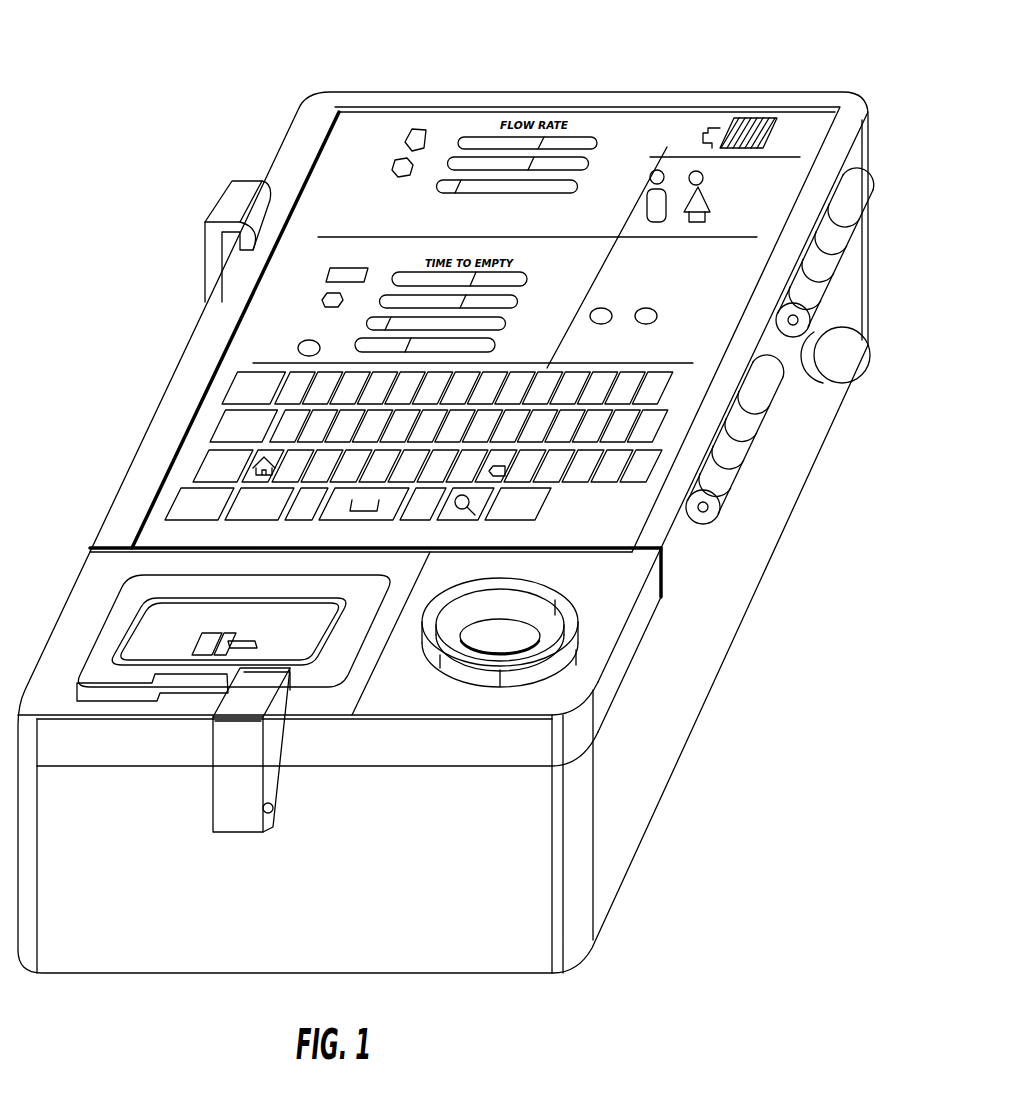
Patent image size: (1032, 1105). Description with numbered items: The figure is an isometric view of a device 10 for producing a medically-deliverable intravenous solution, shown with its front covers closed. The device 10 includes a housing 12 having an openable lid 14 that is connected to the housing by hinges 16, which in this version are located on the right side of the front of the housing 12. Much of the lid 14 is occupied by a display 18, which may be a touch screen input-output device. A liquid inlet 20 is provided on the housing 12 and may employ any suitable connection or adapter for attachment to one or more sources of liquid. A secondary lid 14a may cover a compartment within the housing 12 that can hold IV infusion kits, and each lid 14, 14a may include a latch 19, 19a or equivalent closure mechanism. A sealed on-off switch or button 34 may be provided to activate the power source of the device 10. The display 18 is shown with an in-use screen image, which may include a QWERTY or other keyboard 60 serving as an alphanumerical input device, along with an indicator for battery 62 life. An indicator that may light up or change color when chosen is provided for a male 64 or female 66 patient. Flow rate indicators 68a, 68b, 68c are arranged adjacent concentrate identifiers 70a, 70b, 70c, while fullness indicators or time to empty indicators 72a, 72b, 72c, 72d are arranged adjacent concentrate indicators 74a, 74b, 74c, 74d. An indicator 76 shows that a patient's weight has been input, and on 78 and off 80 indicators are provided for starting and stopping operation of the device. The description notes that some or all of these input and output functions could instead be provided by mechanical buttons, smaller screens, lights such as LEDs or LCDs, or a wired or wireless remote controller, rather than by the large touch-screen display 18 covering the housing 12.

The device 10 is at (178, 133).
The housing 12 is at (643, 837).
The openable lid 14 is at (672, 557).
The secondary lid 14a is at (340, 757).
The hinges 16 is at (826, 275).
The display 18 is at (688, 131).
The latch 19 is at (212, 195).
The latch 19a is at (270, 783).
The liquid inlet 20 is at (573, 602).
The on-off switch or button 34 is at (848, 352).
The keyboard 60 is at (203, 466).
The battery 62 is at (745, 118).
The male patient indicator 64 is at (612, 243).
The female patient indicator 66 is at (702, 197).
The flow rate indicator 68a is at (596, 140).
The flow rate indicator 68b is at (588, 160).
The flow rate indicator 68c is at (548, 193).
The concentrate identifier 70a is at (410, 135).
The concentrate identifier 70b is at (394, 166).
The concentrate identifier 70c is at (382, 188).
The fullness indicator/time to empty indicator 72a is at (527, 280).
The fullness indicator/time to empty indicator 72b is at (517, 301).
The fullness indicator/time to empty indicator 72c is at (506, 323).
The fullness indicator/time to empty indicator 72d is at (496, 345).
The concentrate indicator 74a is at (326, 275).
The concentrate indicator 74b is at (324, 300).
The concentrate indicator 74c is at (313, 323).
The concentrate indicator 74d is at (298, 348).
The weight indicator 76 is at (628, 263).
The on indicator 78 is at (600, 326).
The off indicator 80 is at (650, 323).